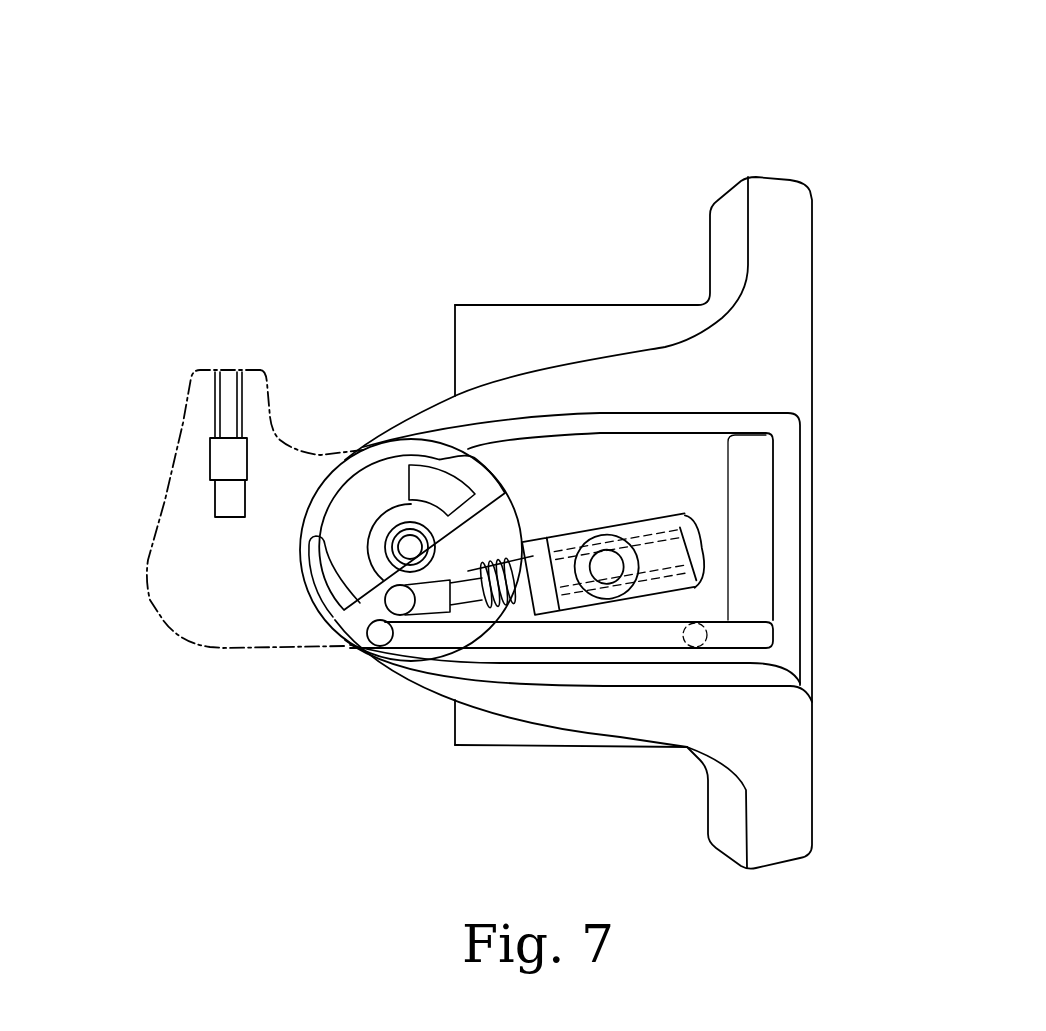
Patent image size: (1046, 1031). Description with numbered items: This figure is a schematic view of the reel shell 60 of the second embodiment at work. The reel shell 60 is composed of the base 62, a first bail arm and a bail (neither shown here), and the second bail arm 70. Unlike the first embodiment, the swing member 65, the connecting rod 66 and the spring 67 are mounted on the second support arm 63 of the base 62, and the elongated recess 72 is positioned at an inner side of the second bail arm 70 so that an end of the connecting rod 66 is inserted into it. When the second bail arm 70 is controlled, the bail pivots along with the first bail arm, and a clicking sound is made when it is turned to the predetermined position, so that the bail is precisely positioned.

The reel shell 60 is at (657, 70).
The base 62 is at (808, 311).
The second support arm 63 is at (478, 402).
The swing member 65 is at (650, 525).
The connecting rod 66 is at (440, 605).
The spring 67 is at (703, 567).
The second bail arm 70 is at (167, 585).
The elongated recess 72 is at (385, 614).